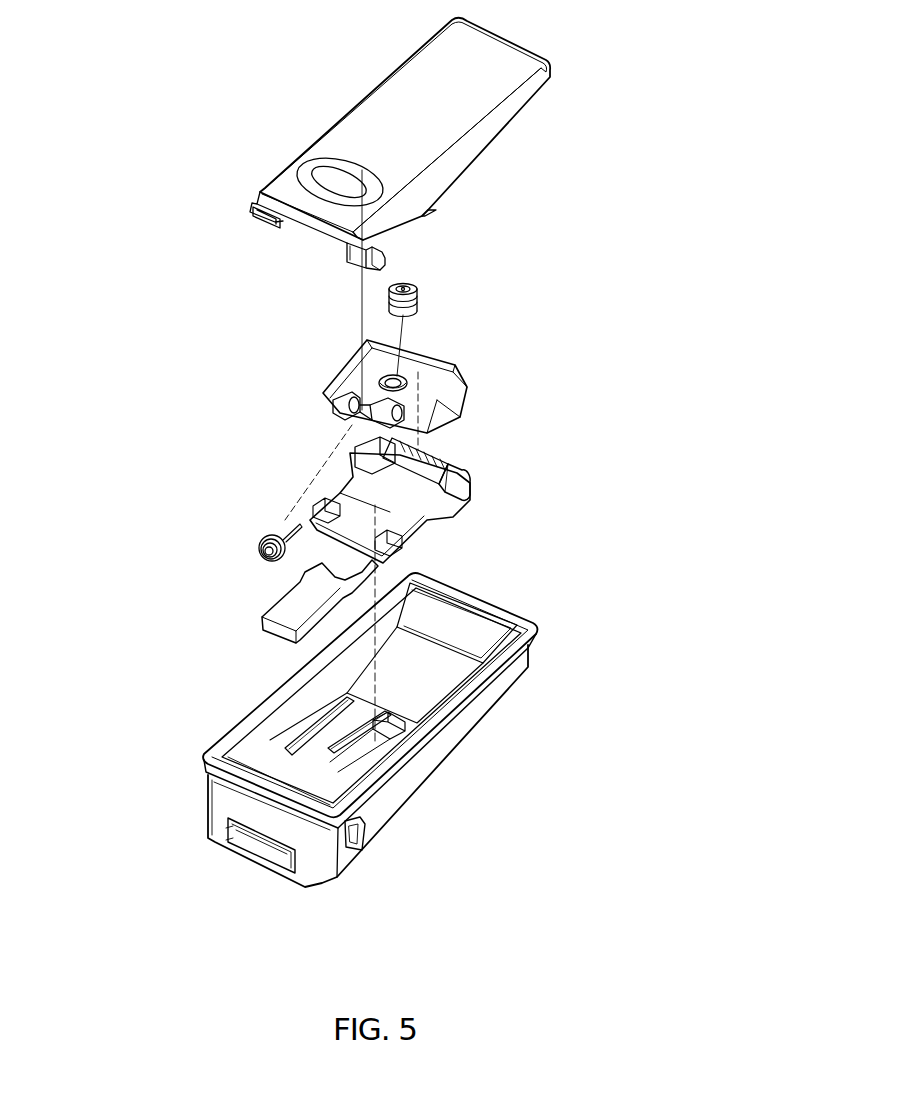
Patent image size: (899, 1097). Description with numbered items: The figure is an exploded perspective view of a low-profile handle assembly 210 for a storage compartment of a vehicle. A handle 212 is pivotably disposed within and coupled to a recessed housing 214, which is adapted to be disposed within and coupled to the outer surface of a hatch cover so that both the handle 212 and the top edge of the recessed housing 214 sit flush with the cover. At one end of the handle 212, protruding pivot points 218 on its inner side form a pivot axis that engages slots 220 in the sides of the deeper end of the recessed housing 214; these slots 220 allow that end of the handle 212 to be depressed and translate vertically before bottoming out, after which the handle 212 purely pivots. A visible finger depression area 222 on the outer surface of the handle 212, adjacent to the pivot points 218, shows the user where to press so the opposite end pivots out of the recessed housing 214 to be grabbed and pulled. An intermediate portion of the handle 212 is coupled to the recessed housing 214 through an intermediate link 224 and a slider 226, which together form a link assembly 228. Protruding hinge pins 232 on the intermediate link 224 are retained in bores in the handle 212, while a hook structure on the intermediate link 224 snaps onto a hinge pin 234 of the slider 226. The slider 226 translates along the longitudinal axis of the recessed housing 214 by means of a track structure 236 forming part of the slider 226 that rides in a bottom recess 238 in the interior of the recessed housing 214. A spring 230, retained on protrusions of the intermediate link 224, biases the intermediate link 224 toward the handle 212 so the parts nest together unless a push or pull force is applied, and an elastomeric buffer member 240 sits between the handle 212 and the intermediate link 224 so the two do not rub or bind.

The low-profile handle assembly 210 is at (248, 425).
The handle 212 is at (345, 100).
The recessed housing 214 is at (245, 695).
The protruding pivot points 218 is at (242, 196).
The slots 220 is at (367, 858).
The finger depression area 222 is at (290, 160).
The intermediate link 224 is at (330, 355).
The slider 226 is at (475, 517).
The link assembly 228 is at (465, 452).
The spring 230 is at (248, 530).
The protruding hinge pins 232 is at (318, 387).
The hinge pin 234 is at (378, 453).
The track structure 236 is at (272, 592).
The bottom recess 238 is at (345, 772).
The buffer member 240 is at (430, 308).